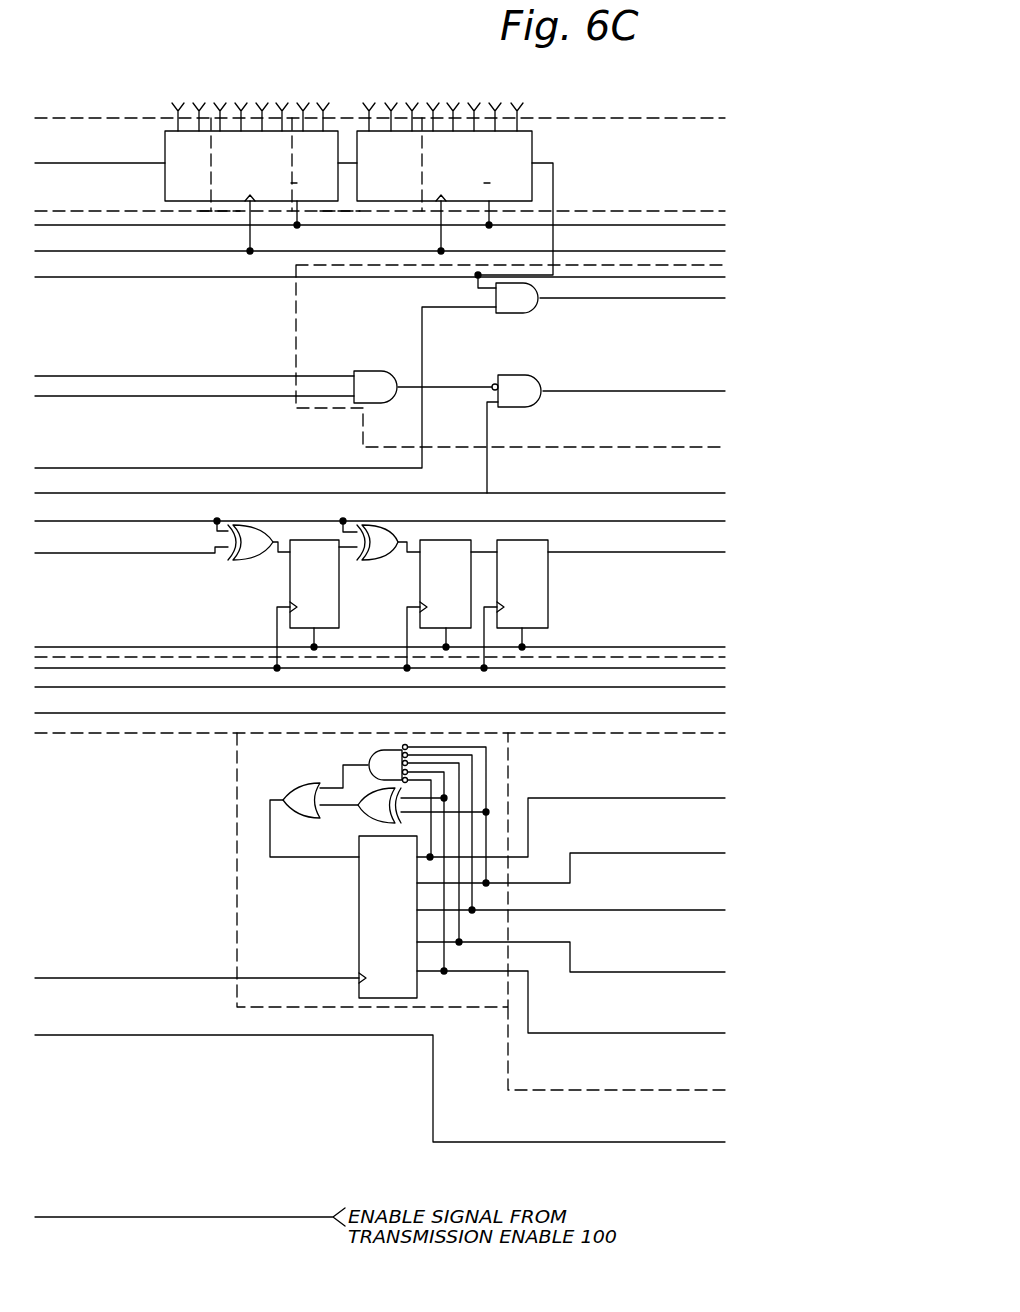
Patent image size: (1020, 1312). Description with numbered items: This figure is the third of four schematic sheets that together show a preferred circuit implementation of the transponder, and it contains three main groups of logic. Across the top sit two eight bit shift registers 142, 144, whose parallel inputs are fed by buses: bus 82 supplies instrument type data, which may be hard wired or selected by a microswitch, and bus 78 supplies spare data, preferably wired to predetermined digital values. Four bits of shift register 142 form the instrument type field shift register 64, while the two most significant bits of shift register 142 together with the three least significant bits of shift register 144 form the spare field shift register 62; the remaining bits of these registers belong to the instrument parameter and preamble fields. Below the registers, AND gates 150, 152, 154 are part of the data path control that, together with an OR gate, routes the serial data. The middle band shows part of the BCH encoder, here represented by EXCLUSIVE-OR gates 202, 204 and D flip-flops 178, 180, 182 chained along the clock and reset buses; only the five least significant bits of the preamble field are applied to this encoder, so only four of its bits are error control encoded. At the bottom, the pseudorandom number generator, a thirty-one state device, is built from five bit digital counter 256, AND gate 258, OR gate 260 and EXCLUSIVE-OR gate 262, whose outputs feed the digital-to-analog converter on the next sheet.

The bus 82 is at (254, 104).
The bus 78 is at (420, 99).
The eight bit shift register 142 is at (268, 171).
The eight bit shift register 144 is at (458, 171).
The instrument type field shift register 64 is at (223, 211).
The spare field shift register 62 is at (343, 211).
The AND gate 150 is at (526, 308).
The AND gate 152 is at (384, 397).
The AND gate 154 is at (528, 401).
The EXCLUSIVE-OR gate 202 is at (259, 542).
The EXCLUSIVE-OR gate 204 is at (388, 542).
The D flip-flop 178 is at (330, 591).
The D flip-flop 180 is at (462, 591).
The D flip-flop 182 is at (539, 591).
The AND gate 258 is at (403, 858).
The OR gate 260 is at (314, 820).
The EXCLUSIVE-OR gate 262 is at (404, 805).
The five bit digital counter 256 is at (394, 941).